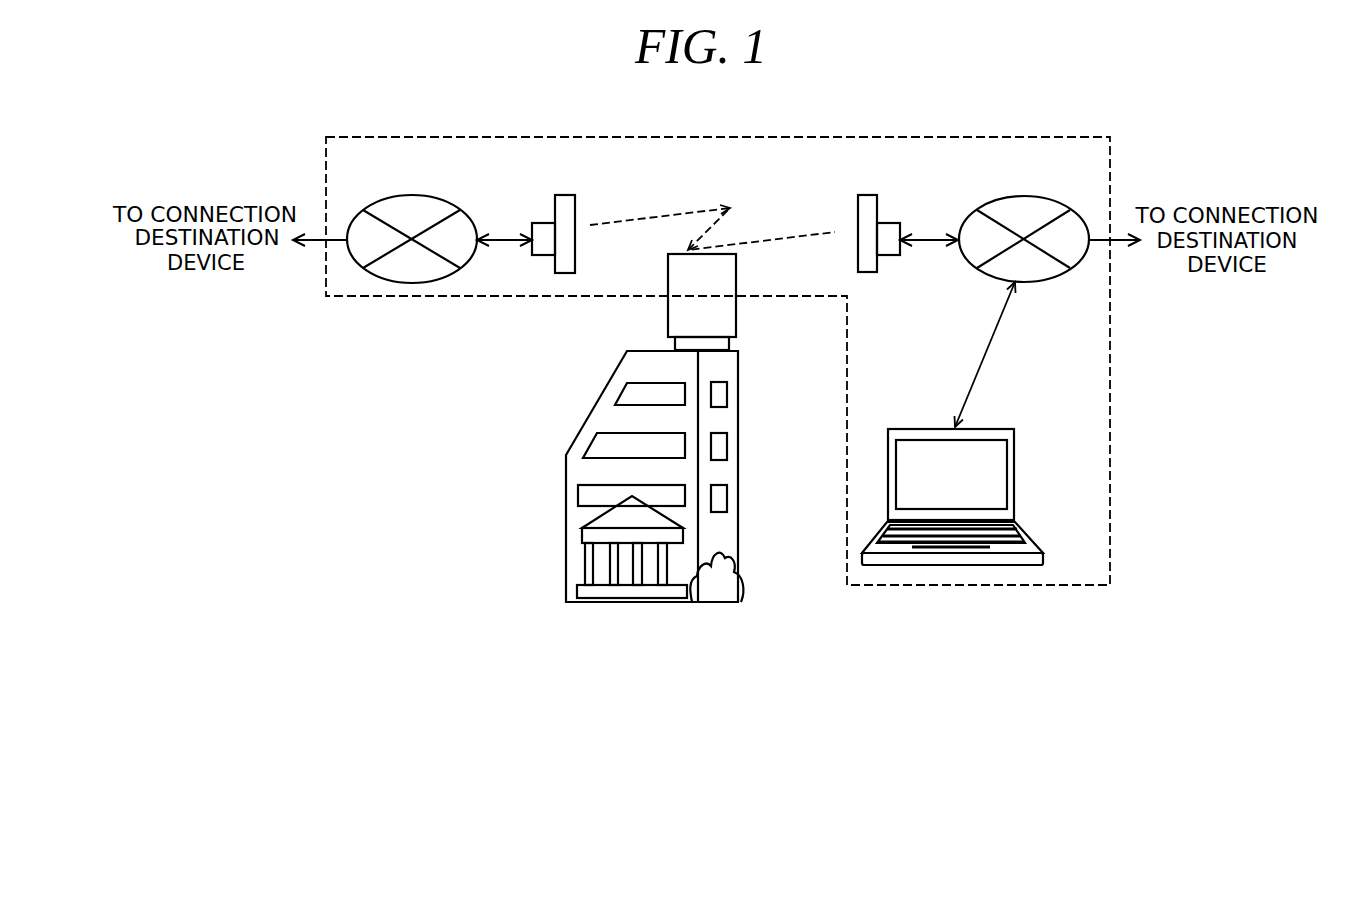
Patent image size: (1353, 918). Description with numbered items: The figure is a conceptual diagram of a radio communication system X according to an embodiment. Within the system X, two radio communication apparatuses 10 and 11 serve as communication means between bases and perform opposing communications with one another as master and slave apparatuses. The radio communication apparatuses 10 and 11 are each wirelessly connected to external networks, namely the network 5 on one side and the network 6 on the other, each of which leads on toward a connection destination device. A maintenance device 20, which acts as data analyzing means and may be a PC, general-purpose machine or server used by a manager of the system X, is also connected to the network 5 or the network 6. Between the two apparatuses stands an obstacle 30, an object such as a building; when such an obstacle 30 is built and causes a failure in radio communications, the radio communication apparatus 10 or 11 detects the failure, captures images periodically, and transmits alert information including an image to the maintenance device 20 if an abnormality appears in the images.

The network 5 is at (1020, 196).
The network 6 is at (420, 196).
The radio communication apparatus 10 is at (877, 205).
The radio communication apparatus 11 is at (576, 208).
The maintenance device 20 is at (1014, 463).
The obstacle 30 is at (738, 440).
The radio communication system X is at (472, 299).